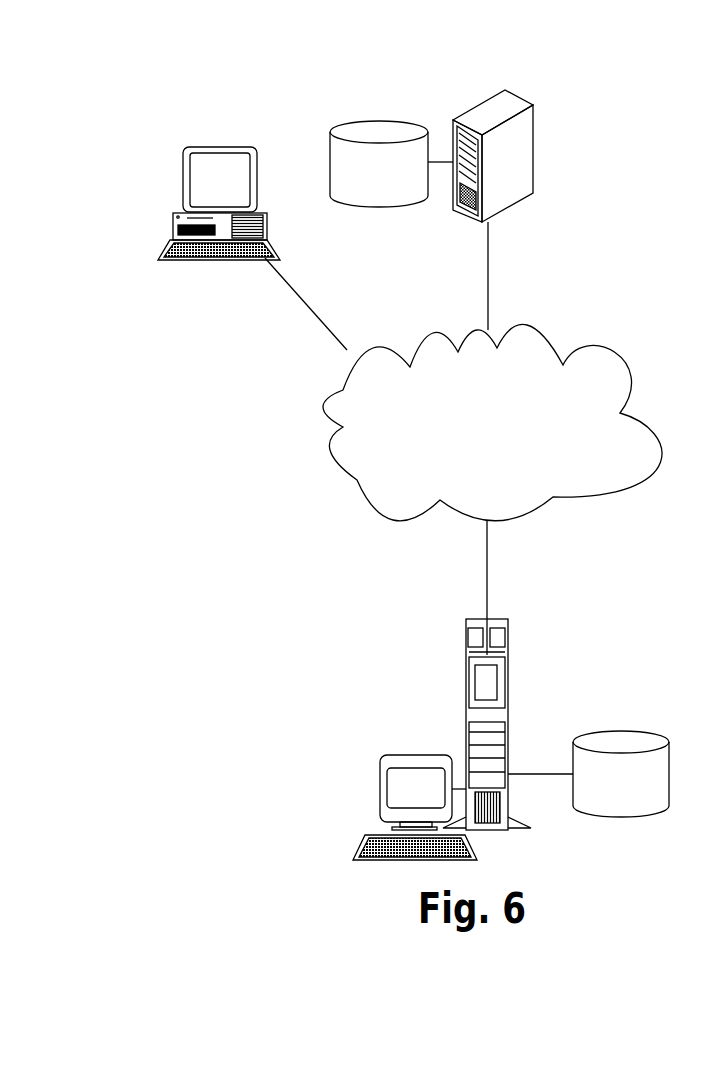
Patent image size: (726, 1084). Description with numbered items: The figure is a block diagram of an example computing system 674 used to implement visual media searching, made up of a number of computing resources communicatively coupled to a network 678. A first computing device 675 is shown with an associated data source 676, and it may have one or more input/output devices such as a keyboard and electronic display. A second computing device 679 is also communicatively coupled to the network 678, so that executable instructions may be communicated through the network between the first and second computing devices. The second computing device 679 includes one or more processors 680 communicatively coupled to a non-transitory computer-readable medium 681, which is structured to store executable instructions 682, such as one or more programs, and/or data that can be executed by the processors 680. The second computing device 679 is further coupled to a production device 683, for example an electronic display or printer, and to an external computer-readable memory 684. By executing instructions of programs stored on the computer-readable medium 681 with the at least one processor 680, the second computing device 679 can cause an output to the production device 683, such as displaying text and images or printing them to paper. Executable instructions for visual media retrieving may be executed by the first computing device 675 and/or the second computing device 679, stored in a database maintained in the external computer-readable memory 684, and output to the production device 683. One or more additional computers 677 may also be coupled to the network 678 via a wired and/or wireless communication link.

The computing system 674 is at (165, 157).
The first computing device 675 is at (537, 151).
The data source 676 is at (370, 124).
The additional computer 677 is at (218, 147).
The network 678 is at (610, 348).
The second computing device 679 is at (508, 684).
The processors 680 is at (468, 638).
The non-transitory computer-readable medium 681 is at (469, 667).
The executable instructions 682 is at (475, 690).
The production device 683 is at (380, 785).
The external computer-readable memory 684 is at (623, 732).